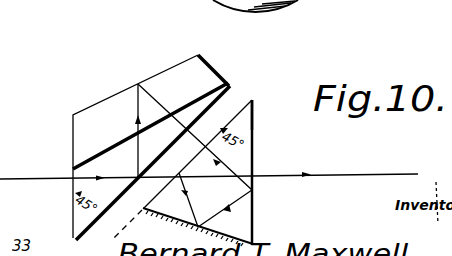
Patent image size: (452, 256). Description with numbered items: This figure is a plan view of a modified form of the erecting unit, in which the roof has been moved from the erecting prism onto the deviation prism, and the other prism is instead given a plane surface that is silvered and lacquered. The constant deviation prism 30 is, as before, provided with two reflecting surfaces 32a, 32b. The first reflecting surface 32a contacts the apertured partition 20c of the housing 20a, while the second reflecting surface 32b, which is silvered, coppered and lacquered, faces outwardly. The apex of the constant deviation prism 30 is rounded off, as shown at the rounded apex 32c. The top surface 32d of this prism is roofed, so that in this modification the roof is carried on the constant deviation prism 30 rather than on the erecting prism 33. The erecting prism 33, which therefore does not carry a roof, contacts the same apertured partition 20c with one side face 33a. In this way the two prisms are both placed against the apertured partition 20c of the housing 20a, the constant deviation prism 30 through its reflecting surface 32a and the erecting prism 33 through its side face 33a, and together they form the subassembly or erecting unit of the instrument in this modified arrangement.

The constant deviation prism 30 is at (97, 100).
The reflecting surface 32a is at (160, 188).
The reflecting surface 32b is at (203, 108).
The rounded apex 32c is at (236, 85).
The top surface 32d is at (86, 163).
The erecting prism 33 is at (257, 219).
The side face 33a is at (178, 163).
The apertured partition 20c is at (255, 90).
The housing 20a is at (0, 12).